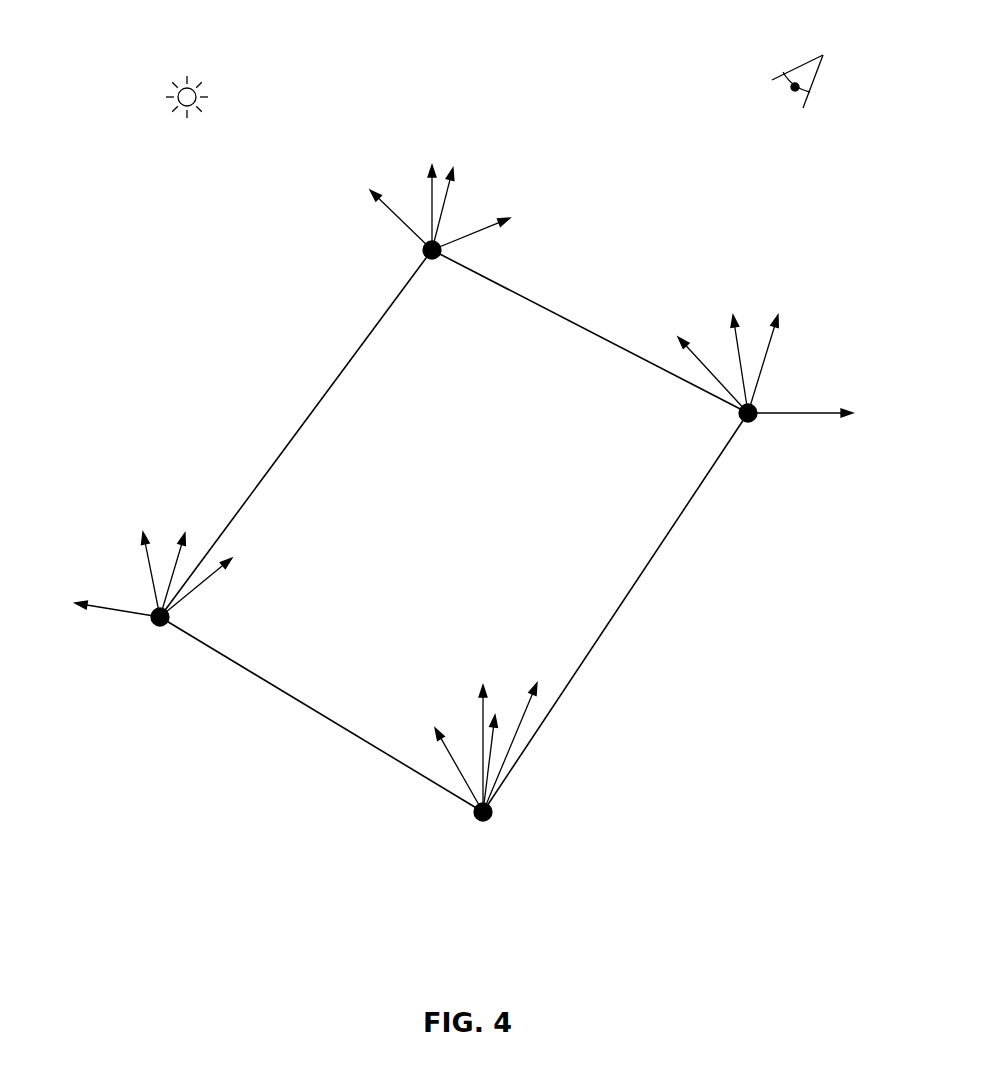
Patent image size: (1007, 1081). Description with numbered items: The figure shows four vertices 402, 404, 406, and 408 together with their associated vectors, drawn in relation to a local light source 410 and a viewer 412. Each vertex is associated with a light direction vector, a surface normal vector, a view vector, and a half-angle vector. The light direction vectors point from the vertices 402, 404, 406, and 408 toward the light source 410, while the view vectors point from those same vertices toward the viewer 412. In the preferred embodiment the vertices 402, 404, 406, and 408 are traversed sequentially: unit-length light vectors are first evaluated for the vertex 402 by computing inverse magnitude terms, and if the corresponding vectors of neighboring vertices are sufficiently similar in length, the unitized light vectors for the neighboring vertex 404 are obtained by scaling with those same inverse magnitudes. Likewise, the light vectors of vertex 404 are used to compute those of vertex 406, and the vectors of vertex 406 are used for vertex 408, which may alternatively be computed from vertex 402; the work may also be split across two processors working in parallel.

The vertex 402 is at (434, 259).
The vertex 404 is at (160, 626).
The vertex 406 is at (478, 821).
The vertex 408 is at (752, 422).
The local light source 410 is at (196, 55).
The viewer 412 is at (818, 40).